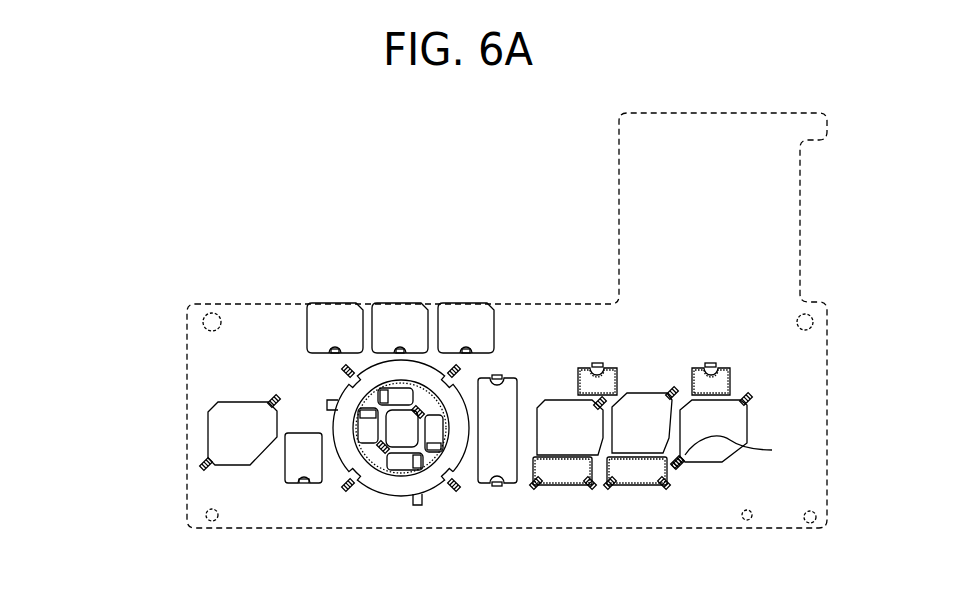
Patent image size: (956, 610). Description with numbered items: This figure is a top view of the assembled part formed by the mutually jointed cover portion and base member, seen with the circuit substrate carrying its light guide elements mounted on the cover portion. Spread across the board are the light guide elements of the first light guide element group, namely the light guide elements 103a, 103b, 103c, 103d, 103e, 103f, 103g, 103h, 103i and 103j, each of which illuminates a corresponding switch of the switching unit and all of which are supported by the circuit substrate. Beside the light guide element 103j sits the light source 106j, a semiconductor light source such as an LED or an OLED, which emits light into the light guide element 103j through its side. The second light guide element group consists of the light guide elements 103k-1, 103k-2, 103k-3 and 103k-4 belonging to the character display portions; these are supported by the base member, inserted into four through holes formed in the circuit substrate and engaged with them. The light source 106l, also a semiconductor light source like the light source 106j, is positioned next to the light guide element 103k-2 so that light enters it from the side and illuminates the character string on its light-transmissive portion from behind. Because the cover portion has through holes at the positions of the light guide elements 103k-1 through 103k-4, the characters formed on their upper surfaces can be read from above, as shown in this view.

The light guide element 103a is at (396, 322).
The light guide element 103b is at (225, 443).
The light guide element 103c is at (305, 482).
The light guide element 103d is at (385, 487).
The light guide element 103e is at (405, 437).
The light guide element 103f is at (433, 430).
The light guide element 103g is at (512, 388).
The light guide element 103h is at (565, 425).
The light guide element 103i is at (663, 455).
The light guide element 103j is at (722, 460).
The light guide element 103k-1 is at (605, 367).
The light guide element 103k-2 is at (690, 378).
The light guide element 103k-3 is at (560, 487).
The light guide element 103k-4 is at (635, 487).
The light source 106j is at (748, 402).
The light source 106l is at (710, 363).